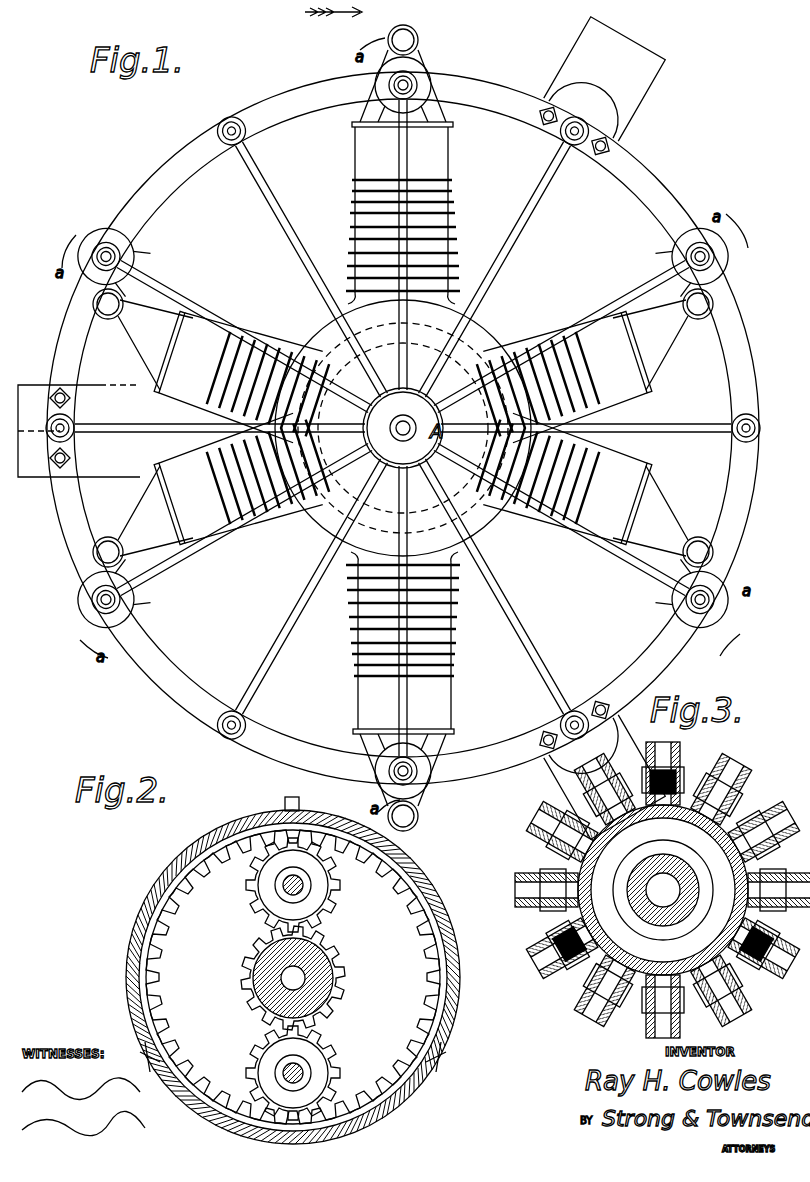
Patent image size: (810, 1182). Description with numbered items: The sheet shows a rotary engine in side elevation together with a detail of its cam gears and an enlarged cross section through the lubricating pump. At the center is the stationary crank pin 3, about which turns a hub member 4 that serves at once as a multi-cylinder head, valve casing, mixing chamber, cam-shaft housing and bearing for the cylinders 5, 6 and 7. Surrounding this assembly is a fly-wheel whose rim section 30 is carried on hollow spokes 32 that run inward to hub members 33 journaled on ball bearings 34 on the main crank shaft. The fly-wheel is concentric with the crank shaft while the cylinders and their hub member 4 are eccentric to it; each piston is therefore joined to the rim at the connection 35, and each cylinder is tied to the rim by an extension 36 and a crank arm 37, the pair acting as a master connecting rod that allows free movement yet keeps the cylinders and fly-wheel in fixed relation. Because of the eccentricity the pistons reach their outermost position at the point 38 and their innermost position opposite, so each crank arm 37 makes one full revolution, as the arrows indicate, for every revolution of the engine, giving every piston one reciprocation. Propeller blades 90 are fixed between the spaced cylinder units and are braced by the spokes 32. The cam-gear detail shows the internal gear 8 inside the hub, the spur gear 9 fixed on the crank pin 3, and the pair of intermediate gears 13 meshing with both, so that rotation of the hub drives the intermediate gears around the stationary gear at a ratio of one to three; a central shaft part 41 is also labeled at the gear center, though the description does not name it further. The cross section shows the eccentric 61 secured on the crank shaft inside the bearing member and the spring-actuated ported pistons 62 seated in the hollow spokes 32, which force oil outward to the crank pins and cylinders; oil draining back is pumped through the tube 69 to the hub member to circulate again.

In FIG. 1, the rim section 30 is at (403, 428).
In FIG. 1, the spokes 32 is at (403, 428).
In FIG. 3, the spokes 32 is at (735, 990).
In FIG. 1, the hub members 33 is at (402, 428).
In FIG. 3, the hub members 33 is at (600, 878).
In FIG. 1, the ball bearings 34 is at (108, 540).
In FIG. 1, the piston-to-rim connection 35 is at (418, 772).
In FIG. 1, the extension 36 is at (440, 735).
In FIG. 1, the crank arm 37 is at (418, 816).
In FIG. 1, the outermost piston position point 38 is at (438, 227).
In FIG. 1, the hub member 4 is at (403, 428).
In FIG. 2, the hub member 4 is at (250, 940).
In FIG. 1, the cylinder 5 is at (403, 213).
In FIG. 1, the cylinder 6 is at (564, 480).
In FIG. 1, the cylinder 7 is at (242, 428).
In FIG. 1, the spur gear 9 is at (403, 643).
In FIG. 2, the spur gear 9 is at (428, 950).
In FIG. 1, the propeller blades 90 is at (341, 428).
In FIG. 2, the tube 69 is at (293, 924).
In FIG. 2, the internal gear 8 is at (293, 977).
In FIG. 2, the intermediate gears 13 is at (330, 1068).
In FIG. 2, the crank pin 3 is at (310, 982).
In FIG. 3, the crank pin 3 is at (700, 889).
In FIG. 2, the shaft 41 is at (280, 978).
In FIG. 3, the shaft 41 is at (663, 890).
In FIG. 3, the eccentric 61 is at (648, 930).
In FIG. 3, the spring-actuated ported pistons 62 is at (705, 935).